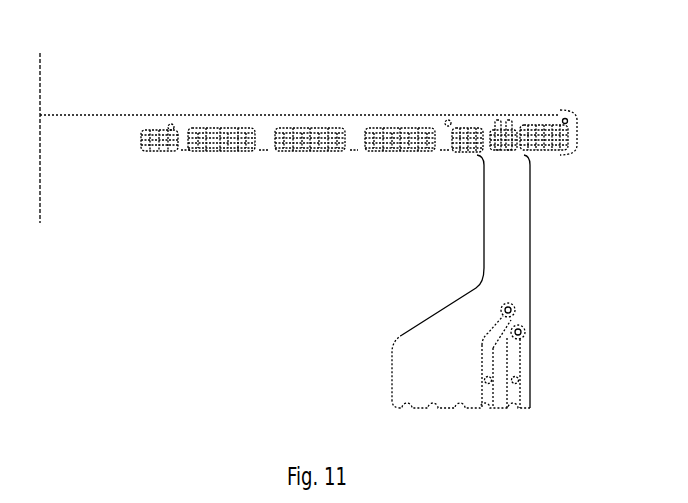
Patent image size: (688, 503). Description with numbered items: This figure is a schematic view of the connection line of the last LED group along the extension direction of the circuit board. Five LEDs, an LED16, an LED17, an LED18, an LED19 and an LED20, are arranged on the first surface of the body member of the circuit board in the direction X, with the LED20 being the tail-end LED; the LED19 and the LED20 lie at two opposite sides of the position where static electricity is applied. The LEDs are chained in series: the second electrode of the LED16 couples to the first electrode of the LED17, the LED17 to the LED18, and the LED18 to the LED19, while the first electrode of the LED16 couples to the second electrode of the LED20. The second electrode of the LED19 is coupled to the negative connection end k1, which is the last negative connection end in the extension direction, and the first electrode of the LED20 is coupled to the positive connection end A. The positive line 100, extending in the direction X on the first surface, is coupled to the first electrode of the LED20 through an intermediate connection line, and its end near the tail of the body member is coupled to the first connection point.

The positive line 100 is at (388, 101).
The element LED16 is at (205, 157).
The element LED17 is at (307, 159).
The element LED18 is at (398, 159).
The element LED19 is at (462, 155).
The element LED20 is at (535, 155).
The negative connection end k1 is at (496, 377).
The positive connection end A is at (513, 371).